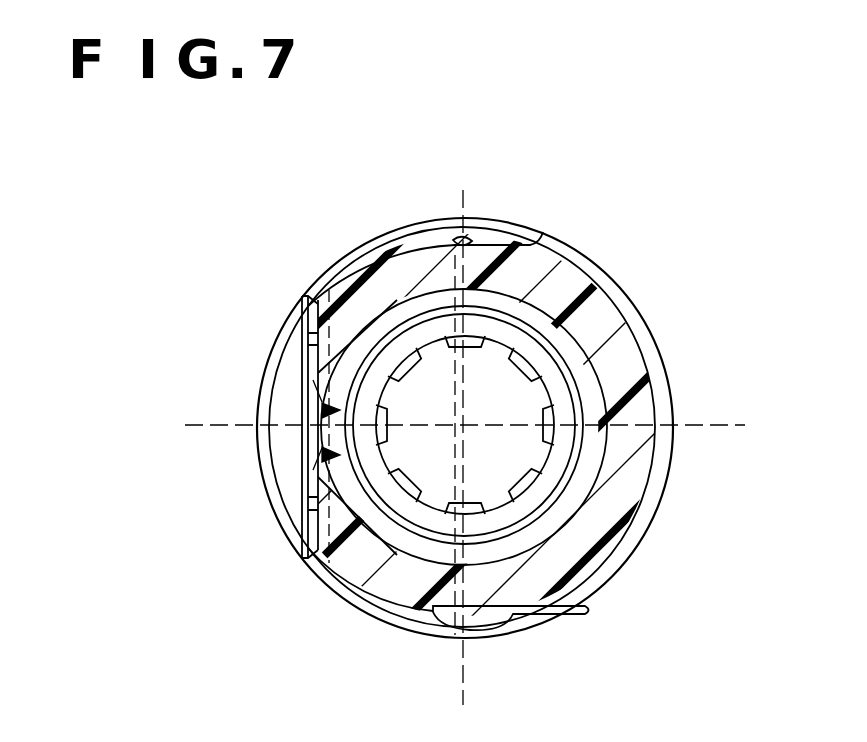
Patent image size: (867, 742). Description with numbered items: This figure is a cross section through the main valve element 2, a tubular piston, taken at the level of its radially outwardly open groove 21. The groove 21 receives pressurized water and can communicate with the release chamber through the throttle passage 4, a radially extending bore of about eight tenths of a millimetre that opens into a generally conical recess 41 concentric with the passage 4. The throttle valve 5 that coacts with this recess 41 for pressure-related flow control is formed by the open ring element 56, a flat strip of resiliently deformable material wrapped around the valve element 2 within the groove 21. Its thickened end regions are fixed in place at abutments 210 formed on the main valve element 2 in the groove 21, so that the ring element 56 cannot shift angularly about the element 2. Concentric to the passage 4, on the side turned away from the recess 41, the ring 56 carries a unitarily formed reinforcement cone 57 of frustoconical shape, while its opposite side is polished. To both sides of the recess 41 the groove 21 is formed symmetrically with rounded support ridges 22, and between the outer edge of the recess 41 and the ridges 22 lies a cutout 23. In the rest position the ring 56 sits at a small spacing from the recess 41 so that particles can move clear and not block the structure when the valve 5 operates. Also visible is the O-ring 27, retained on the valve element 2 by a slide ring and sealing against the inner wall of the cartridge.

The main valve element 2 is at (617, 375).
The groove 21 is at (582, 264).
The support ridges 22 is at (315, 306).
The cutout 23 is at (305, 333).
The throttle passage 4 is at (310, 442).
The conical recess 41 is at (330, 411).
The throttle valve 5 is at (290, 392).
The open ring element 56 is at (378, 240).
The reinforcement cone 57 is at (300, 440).
The O-ring 27 is at (313, 500).
The abutments 210 is at (421, 243).